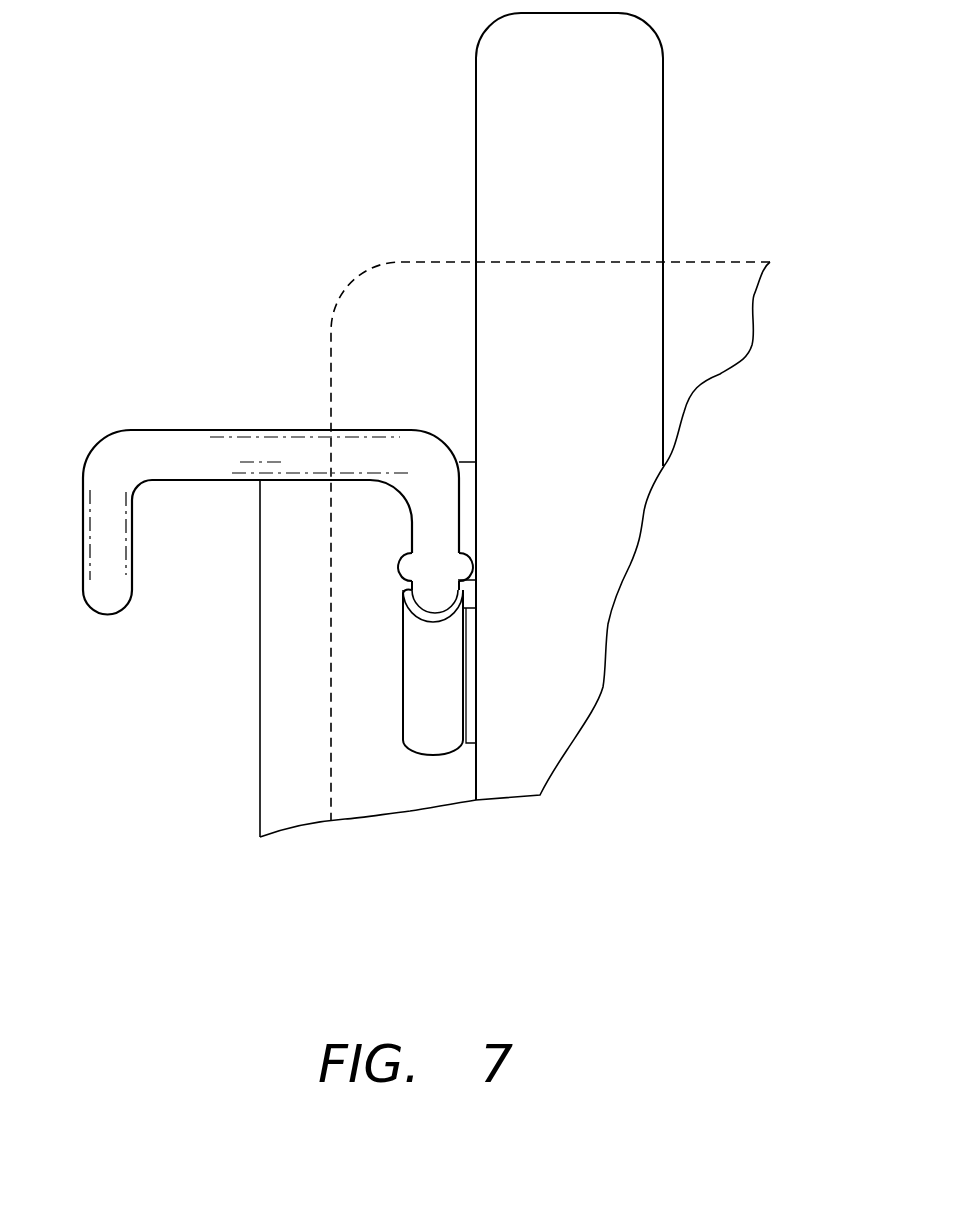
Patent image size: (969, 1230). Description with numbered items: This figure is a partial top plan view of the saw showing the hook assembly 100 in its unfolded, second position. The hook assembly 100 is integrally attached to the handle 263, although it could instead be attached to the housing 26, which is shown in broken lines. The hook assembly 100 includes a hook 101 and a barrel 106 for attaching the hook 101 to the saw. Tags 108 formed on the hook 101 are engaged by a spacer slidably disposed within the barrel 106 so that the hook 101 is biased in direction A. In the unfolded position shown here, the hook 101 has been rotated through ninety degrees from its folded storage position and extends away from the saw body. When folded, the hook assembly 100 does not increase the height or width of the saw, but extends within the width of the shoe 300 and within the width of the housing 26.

The housing 26 is at (695, 262).
The hook assembly 100 is at (453, 675).
The hook 101 is at (170, 453).
The barrel 106 is at (425, 728).
The tags 108 is at (400, 567).
The handle 263 is at (517, 325).
The shoe 300 is at (285, 782).